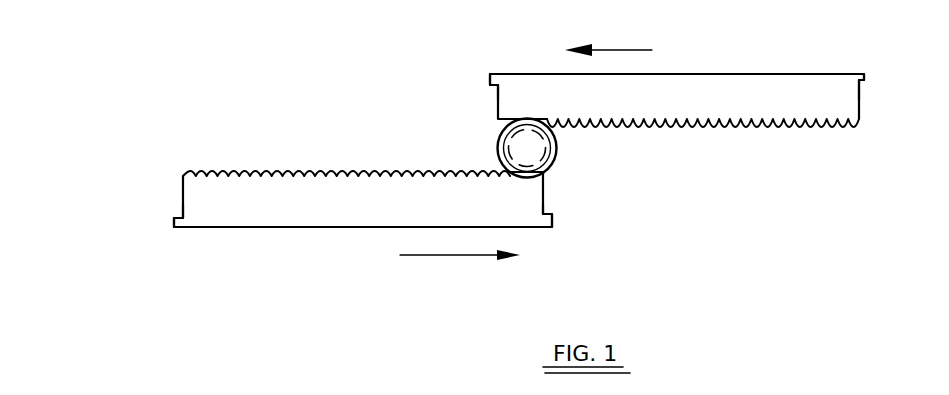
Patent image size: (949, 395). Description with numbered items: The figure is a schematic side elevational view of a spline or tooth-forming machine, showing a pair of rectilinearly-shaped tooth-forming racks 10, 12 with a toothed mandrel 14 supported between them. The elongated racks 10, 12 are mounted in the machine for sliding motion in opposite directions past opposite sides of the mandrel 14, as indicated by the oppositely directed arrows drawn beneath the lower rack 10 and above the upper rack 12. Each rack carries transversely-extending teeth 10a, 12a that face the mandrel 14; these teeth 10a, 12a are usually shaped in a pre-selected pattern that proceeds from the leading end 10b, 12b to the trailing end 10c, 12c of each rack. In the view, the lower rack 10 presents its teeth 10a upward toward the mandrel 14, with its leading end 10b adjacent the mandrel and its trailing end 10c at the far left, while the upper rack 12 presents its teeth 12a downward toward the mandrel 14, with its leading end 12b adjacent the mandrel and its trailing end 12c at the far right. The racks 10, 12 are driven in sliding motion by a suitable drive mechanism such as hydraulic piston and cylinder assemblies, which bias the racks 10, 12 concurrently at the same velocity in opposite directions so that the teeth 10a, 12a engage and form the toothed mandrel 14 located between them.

The tooth-forming rack 10 is at (308, 212).
The teeth 10a is at (283, 172).
The leading end 10b is at (545, 197).
The trailing end 10c is at (183, 192).
The tooth-forming rack 12 is at (715, 88).
The teeth 12a is at (740, 127).
The leading end 12b is at (498, 95).
The trailing end 12c is at (862, 105).
The toothed mandrel 14 is at (540, 153).